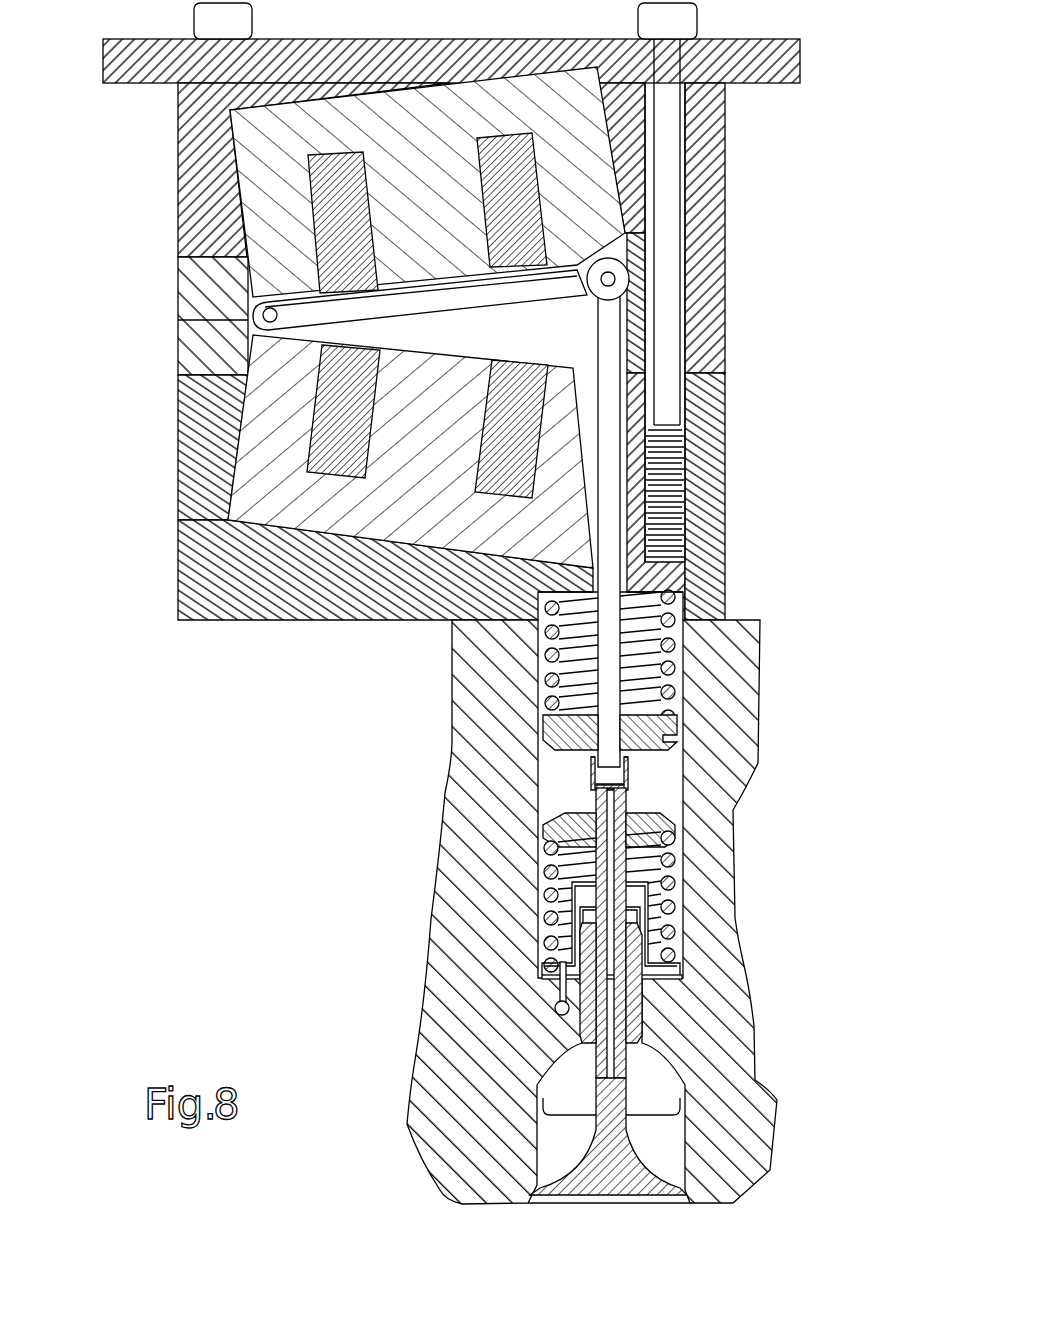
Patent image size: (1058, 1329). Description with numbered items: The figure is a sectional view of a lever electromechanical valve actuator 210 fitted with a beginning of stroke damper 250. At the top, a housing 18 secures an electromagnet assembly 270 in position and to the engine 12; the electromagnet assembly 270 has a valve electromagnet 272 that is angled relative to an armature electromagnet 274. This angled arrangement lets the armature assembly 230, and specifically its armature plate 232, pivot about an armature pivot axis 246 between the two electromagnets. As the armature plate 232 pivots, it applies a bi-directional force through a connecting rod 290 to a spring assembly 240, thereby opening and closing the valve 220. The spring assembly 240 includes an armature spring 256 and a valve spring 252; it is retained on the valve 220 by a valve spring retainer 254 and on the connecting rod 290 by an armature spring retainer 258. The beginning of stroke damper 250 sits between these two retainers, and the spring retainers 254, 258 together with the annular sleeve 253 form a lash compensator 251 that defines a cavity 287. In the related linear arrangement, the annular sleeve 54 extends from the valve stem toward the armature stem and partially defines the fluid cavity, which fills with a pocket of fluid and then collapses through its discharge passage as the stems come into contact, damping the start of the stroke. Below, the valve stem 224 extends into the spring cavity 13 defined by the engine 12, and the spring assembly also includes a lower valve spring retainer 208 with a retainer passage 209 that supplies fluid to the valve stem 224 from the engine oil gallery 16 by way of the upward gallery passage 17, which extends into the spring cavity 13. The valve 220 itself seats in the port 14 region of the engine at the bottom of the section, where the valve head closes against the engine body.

The engine 12 is at (545, 812).
The spring cavity 13 is at (546, 818).
The port 14 is at (560, 1147).
The engine oil gallery 16 is at (556, 1012).
The upward gallery passage 17 is at (560, 988).
The housing 18 is at (708, 150).
The annular sleeve 54 is at (631, 764).
The lower valve spring retainer 208 is at (570, 895).
The retainer passage 209 is at (582, 935).
The lever electromechanical valve actuator 210 is at (143, 636).
The valve 220 is at (617, 1197).
The valve stem 224 is at (624, 1070).
The armature assembly 230 is at (472, 292).
The armature plate 232 is at (400, 300).
The spring assembly 240 is at (682, 714).
The armature pivot axis 246 is at (263, 316).
The beginning of stroke damper 250 is at (586, 786).
The lash compensator 251 is at (660, 839).
The valve spring 252 is at (676, 931).
The annular sleeve 253 is at (590, 768).
The valve spring retainer 254 is at (674, 841).
The armature spring 256 is at (674, 600).
The armature spring retainer 258 is at (672, 737).
The electromagnet assembly 270 is at (275, 205).
The valve electromagnet 272 is at (380, 500).
The armature electromagnet 274 is at (468, 100).
The cavity 287 is at (632, 787).
The connecting rod 290 is at (612, 622).